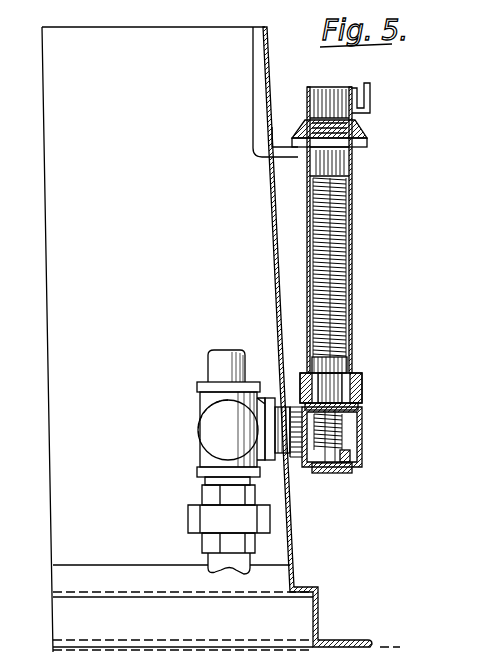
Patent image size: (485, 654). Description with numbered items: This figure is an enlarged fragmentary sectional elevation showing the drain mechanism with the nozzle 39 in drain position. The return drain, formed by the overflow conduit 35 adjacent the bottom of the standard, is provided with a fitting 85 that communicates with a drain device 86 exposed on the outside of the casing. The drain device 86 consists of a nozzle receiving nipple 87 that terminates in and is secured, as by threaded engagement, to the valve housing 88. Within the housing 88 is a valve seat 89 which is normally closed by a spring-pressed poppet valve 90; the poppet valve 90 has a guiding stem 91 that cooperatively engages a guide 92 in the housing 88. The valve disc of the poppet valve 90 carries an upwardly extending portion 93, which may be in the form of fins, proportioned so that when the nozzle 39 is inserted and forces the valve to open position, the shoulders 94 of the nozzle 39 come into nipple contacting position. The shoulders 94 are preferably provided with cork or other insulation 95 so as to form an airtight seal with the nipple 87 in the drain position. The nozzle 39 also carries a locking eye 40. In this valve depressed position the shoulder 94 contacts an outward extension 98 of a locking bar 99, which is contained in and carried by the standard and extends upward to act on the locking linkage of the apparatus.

The overflow conduit 35 is at (210, 361).
The nozzle 39 is at (351, 226).
The locking eye 40 is at (367, 96).
The fitting 85 is at (215, 437).
The drain device 86 is at (325, 474).
The nozzle receiving nipple 87 is at (352, 316).
The valve housing 88 is at (362, 450).
The valve seat 89 is at (358, 398).
The spring-pressed poppet valve 90 is at (360, 407).
The guiding stem 91 is at (344, 425).
The guide 92 is at (352, 462).
The upwardly extending portion 93 is at (348, 372).
The shoulders 94 is at (352, 135).
The cork insulation 95 is at (349, 151).
The outward extension 98 is at (279, 150).
The locking bar 99 is at (262, 62).